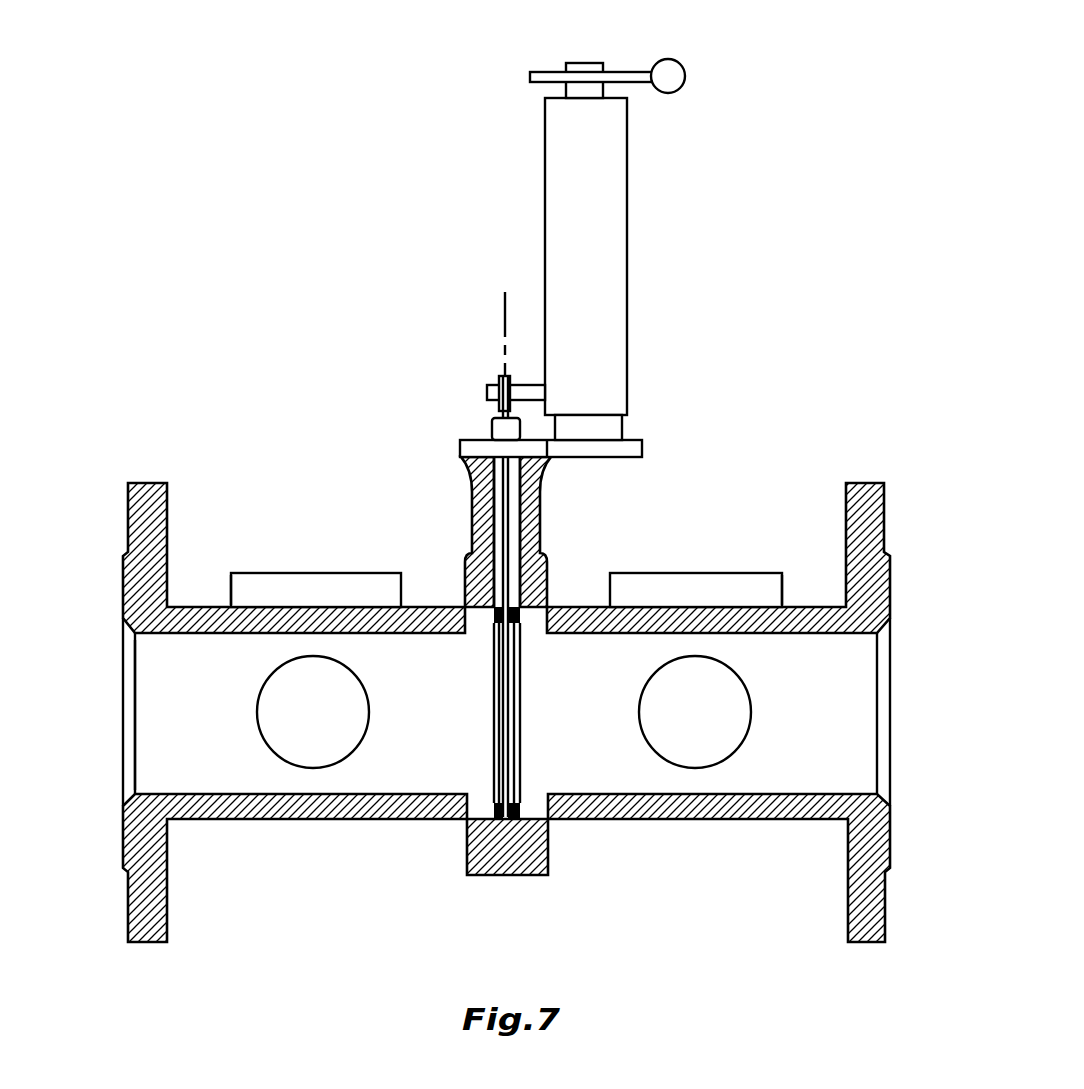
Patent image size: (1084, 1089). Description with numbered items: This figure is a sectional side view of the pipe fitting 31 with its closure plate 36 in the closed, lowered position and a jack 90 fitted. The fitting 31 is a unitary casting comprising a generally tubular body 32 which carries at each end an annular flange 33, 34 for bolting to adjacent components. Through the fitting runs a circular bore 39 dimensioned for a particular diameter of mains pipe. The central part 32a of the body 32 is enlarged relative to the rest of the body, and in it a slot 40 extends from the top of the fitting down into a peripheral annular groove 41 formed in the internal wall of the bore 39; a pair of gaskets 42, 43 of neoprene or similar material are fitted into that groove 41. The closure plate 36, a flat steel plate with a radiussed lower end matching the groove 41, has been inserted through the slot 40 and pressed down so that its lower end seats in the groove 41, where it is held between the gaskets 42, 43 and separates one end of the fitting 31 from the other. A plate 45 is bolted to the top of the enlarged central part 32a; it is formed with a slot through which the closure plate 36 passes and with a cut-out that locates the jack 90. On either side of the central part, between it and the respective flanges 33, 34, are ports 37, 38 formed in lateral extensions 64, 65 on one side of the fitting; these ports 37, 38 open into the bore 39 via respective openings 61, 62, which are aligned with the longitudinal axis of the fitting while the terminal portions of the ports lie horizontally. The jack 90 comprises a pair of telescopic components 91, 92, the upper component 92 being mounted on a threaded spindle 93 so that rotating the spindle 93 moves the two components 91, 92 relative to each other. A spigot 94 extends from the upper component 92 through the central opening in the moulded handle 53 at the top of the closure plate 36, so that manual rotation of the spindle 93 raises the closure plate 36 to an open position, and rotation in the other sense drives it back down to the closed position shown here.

The pipe fitting 31 is at (310, 836).
The body 32 is at (711, 806).
The central part of the body 32a is at (533, 507).
The annular flange 33 is at (884, 513).
The annular flange 34 is at (128, 513).
The closure plate 36 is at (508, 718).
The port 37 is at (313, 573).
The port 38 is at (698, 573).
The circular bore 39 is at (160, 710).
The slot 40 is at (497, 543).
The peripheral annular groove 41 is at (514, 797).
The gasket 42 is at (497, 667).
The gasket 43 is at (516, 667).
The plate 45 is at (460, 450).
The moulded handle 53 is at (499, 383).
The opening 61 is at (288, 686).
The opening 62 is at (728, 686).
The lateral extension 64 is at (231, 587).
The lateral extension 65 is at (782, 587).
The jack 90 is at (713, 292).
The telescopic component 91 is at (596, 428).
The telescopic component 92 is at (606, 189).
The threaded spindle 93 is at (582, 62).
The spigot 94 is at (525, 391).